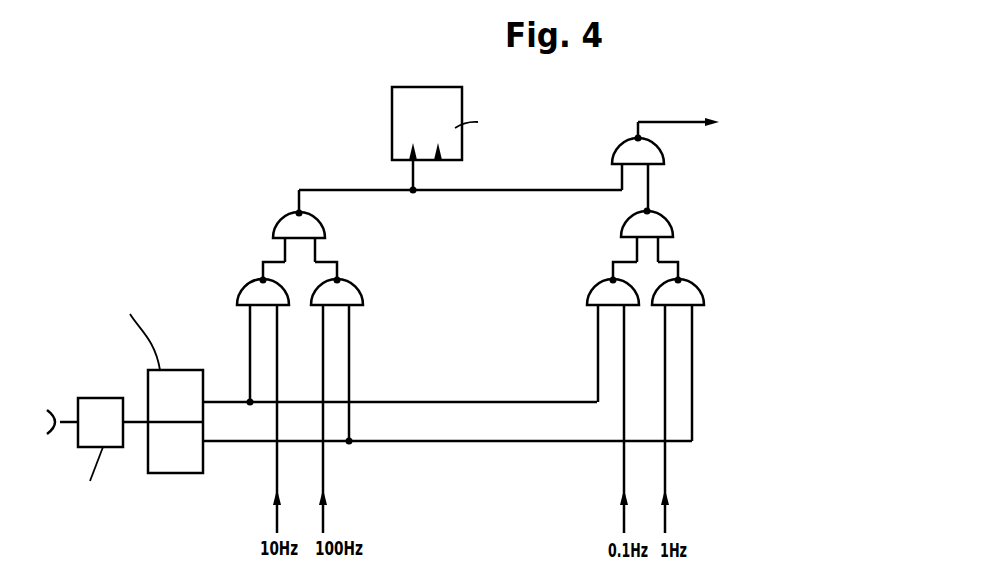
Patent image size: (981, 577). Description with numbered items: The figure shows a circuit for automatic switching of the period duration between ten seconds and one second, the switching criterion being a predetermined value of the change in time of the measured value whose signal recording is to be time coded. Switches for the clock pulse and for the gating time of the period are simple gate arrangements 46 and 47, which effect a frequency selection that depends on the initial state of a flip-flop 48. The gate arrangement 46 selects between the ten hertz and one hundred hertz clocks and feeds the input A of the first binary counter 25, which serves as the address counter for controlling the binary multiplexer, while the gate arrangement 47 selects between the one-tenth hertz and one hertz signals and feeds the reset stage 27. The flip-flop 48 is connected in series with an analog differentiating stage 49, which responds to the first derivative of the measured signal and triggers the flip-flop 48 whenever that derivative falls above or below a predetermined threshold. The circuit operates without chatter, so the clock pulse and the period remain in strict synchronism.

The first binary counter 25 is at (499, 138).
The reset stage 27 is at (748, 121).
The gate arrangement 46 is at (275, 268).
The gate arrangement 47 is at (673, 265).
The flip-flop 48 is at (170, 382).
The analog differentiating stage 49 is at (97, 410).